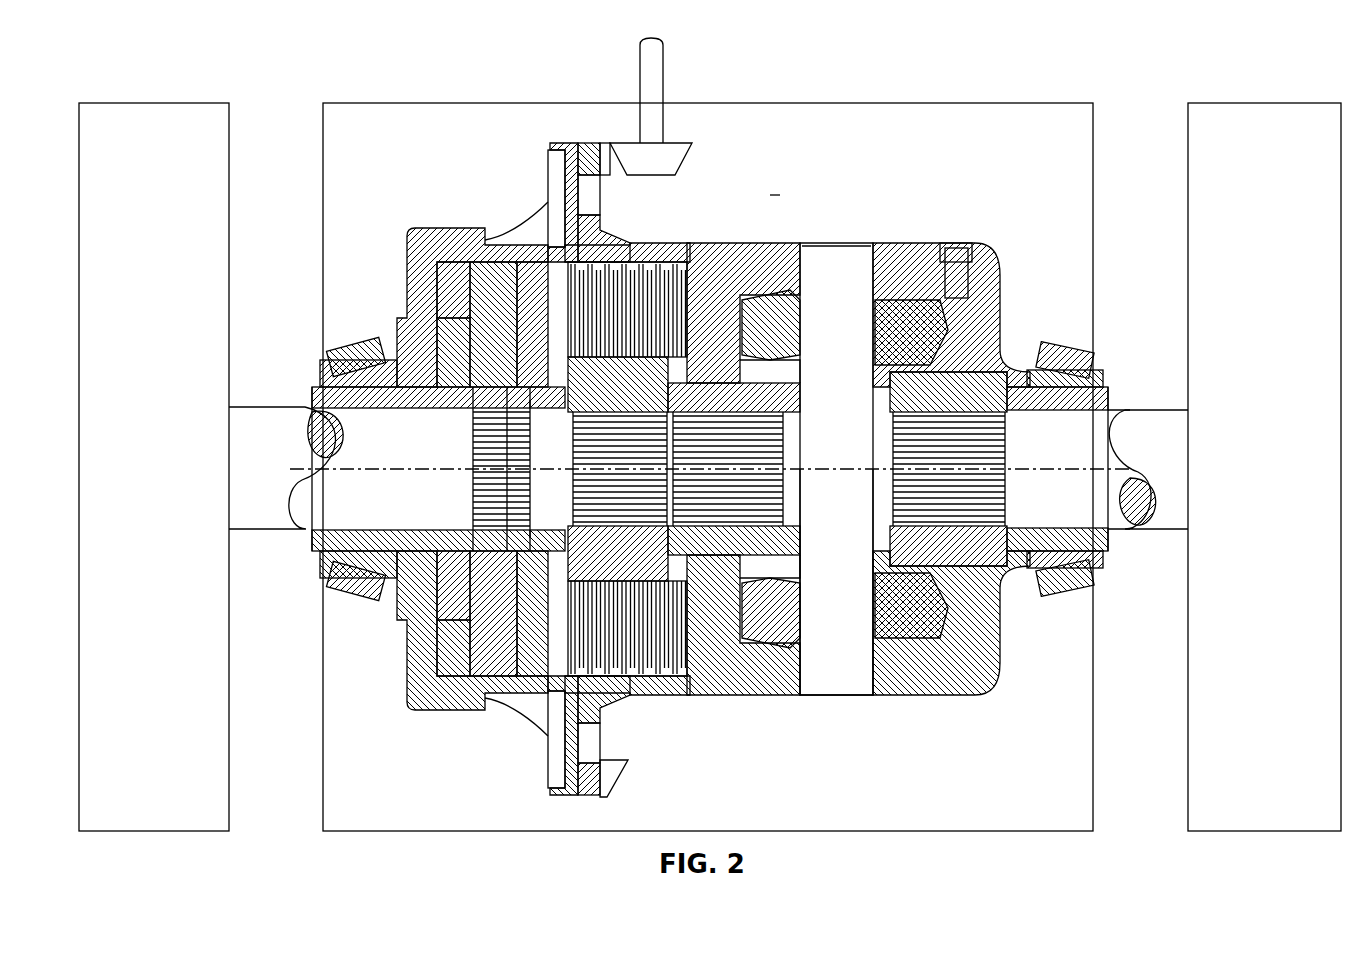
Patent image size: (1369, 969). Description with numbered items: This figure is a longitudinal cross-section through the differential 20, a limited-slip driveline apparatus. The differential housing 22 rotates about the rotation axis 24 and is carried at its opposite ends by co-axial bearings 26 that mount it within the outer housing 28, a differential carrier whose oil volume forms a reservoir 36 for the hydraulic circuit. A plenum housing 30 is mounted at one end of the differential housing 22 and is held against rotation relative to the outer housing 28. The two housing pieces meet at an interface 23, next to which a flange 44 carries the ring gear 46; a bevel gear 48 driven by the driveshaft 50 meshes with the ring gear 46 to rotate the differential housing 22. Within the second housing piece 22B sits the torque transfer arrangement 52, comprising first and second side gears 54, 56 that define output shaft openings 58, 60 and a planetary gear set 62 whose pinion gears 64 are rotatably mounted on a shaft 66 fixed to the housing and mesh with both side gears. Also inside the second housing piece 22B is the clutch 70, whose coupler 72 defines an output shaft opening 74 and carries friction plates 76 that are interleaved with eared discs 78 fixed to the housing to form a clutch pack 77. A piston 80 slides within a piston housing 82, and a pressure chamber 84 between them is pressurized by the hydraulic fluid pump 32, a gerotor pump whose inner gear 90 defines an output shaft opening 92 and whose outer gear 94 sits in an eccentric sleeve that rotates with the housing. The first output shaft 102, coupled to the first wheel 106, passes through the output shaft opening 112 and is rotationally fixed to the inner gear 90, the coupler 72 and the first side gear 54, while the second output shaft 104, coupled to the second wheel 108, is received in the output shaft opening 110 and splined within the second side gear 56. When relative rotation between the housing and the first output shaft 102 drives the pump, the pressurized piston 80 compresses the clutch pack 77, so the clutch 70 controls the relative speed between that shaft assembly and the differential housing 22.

The differential 20 is at (779, 188).
The differential housing 22 is at (951, 236).
The second housing piece 22B is at (998, 267).
The interface 23 is at (568, 143).
The rotation axis 24 is at (1118, 410).
The bearings 26 is at (370, 340).
The outer housing 28 is at (965, 103).
The plenum housing 30 is at (402, 695).
The hydraulic fluid pump 32 is at (520, 705).
The reservoir 36 is at (847, 788).
The flange 44 is at (588, 143).
The ring gear 46 is at (606, 143).
The bevel gear 48 is at (695, 152).
The driveshaft 50 is at (665, 78).
The torque transfer arrangement 52 is at (838, 232).
The first side gear 54 is at (725, 640).
The second side gear 56 is at (925, 655).
The output shaft opening 58 is at (752, 516).
The output shaft opening 60 is at (895, 545).
The planetary gear set 62 is at (893, 665).
The pinion gears 64 is at (752, 300).
The shaft 66 is at (856, 243).
The clutch 70 is at (647, 688).
The coupler 72 is at (708, 292).
The output shaft opening 74 is at (640, 520).
The friction plates 76 is at (612, 685).
The clutch pack 77 is at (652, 240).
The eared discs 78 is at (548, 740).
The piston 80 is at (557, 232).
The piston housing 82 is at (527, 278).
The pressure chamber 84 is at (485, 272).
The inner gear 90 is at (485, 558).
The output shaft opening 92 is at (480, 492).
The outer gear 94 is at (478, 640).
The first output shaft 102 is at (300, 405).
The second output shaft 104 is at (1178, 532).
The first wheel 106 is at (155, 103).
The second wheel 108 is at (1265, 103).
The output shaft opening 110 is at (1075, 410).
The output shaft opening 112 is at (357, 410).